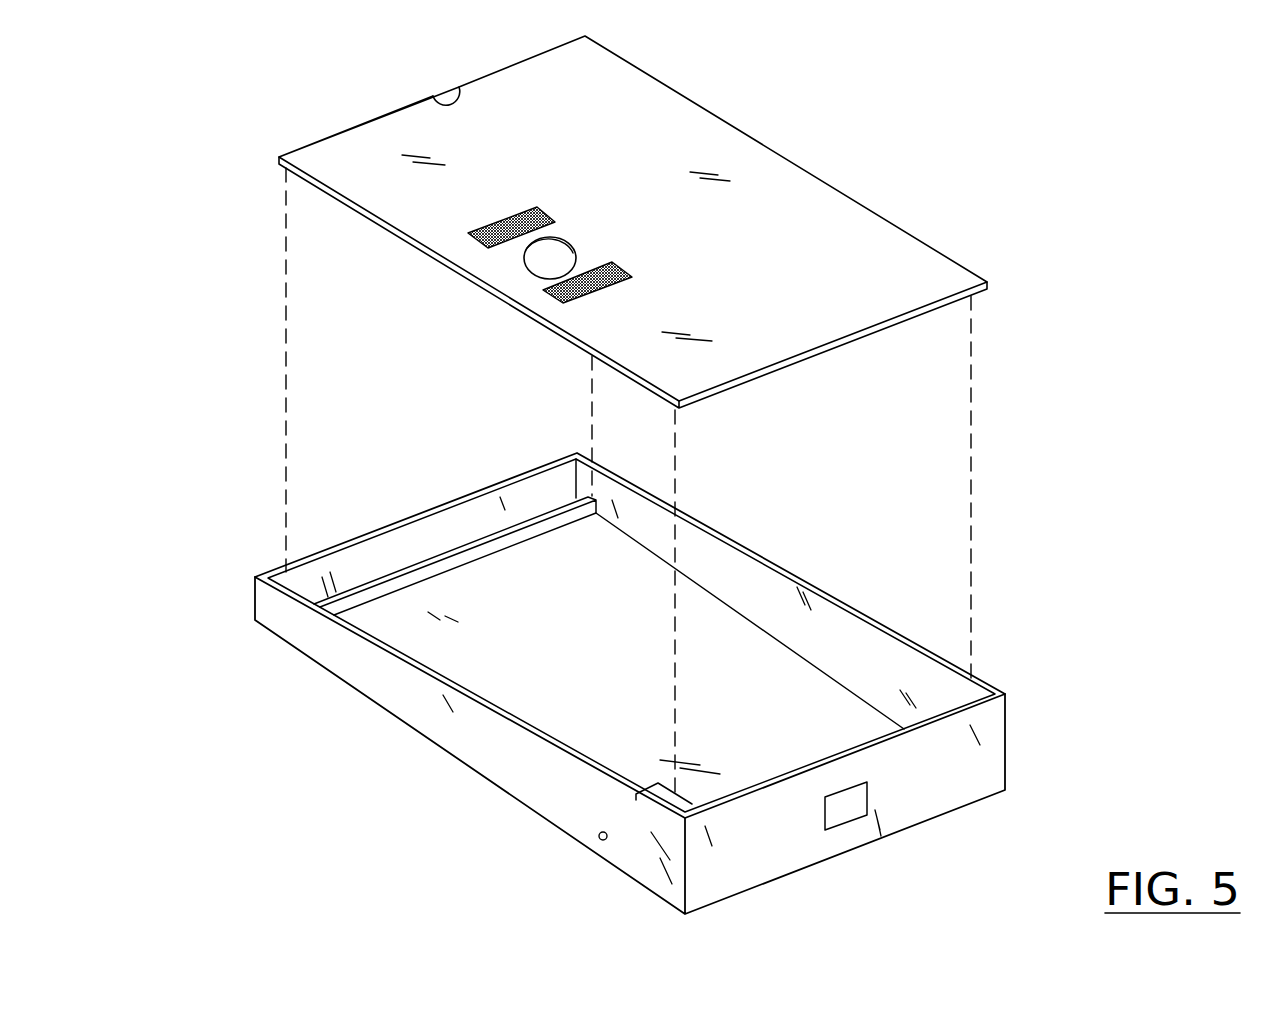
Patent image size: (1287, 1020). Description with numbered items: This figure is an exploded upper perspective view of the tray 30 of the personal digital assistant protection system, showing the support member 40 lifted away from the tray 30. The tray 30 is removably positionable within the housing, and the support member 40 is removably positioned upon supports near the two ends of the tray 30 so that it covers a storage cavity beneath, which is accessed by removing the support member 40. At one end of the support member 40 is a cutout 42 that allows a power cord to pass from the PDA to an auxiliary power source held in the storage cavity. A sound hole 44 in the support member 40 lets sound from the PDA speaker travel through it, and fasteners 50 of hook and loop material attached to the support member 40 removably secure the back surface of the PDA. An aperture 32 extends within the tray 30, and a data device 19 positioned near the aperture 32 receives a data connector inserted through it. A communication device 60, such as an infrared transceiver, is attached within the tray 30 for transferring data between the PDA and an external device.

The data device 19 is at (655, 790).
The tray 30 is at (430, 743).
The aperture 32 is at (600, 841).
The support member 40 is at (708, 265).
The cutout 42 is at (457, 91).
The sound hole 44 is at (540, 260).
The fasteners 50 is at (472, 236).
The communication device 60 is at (847, 817).